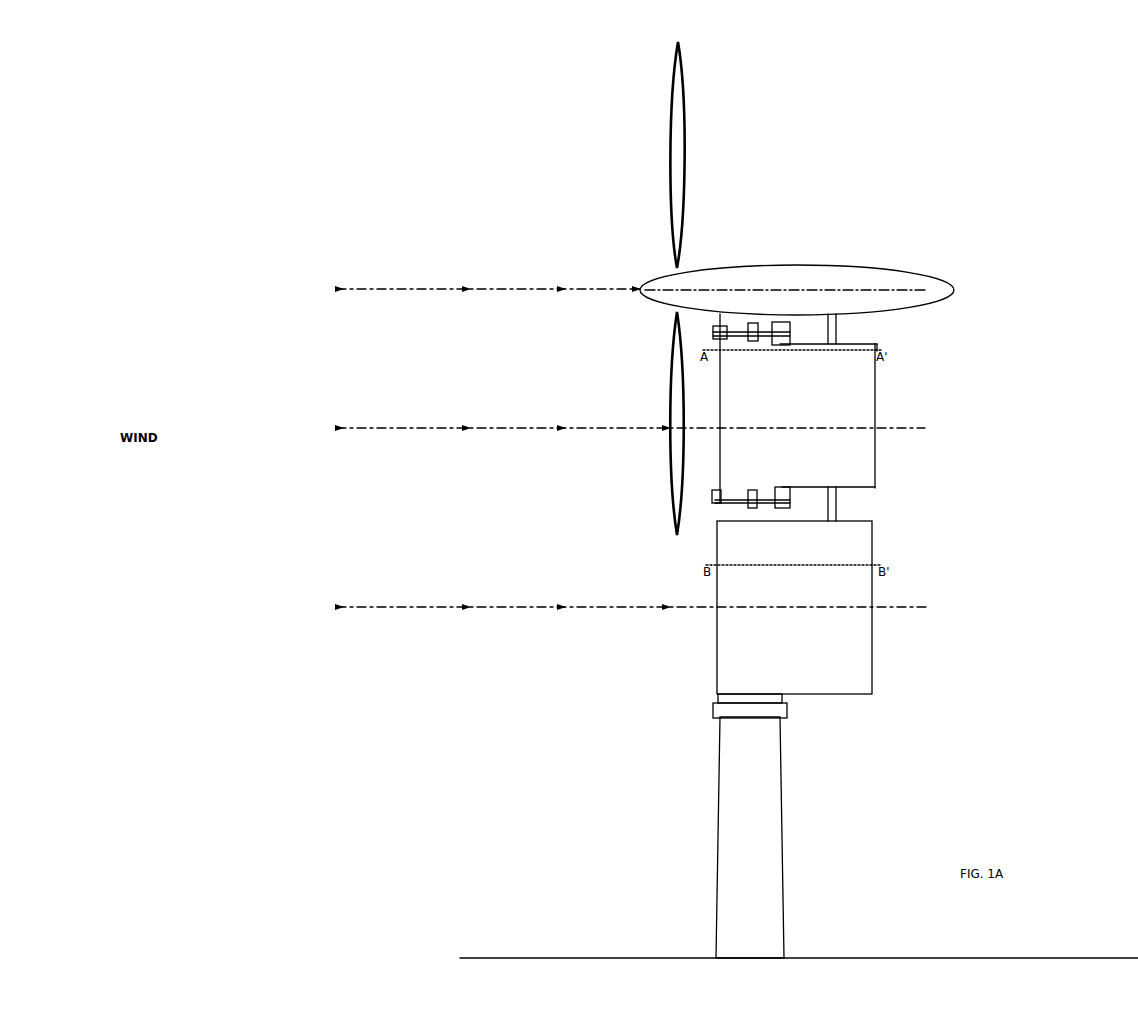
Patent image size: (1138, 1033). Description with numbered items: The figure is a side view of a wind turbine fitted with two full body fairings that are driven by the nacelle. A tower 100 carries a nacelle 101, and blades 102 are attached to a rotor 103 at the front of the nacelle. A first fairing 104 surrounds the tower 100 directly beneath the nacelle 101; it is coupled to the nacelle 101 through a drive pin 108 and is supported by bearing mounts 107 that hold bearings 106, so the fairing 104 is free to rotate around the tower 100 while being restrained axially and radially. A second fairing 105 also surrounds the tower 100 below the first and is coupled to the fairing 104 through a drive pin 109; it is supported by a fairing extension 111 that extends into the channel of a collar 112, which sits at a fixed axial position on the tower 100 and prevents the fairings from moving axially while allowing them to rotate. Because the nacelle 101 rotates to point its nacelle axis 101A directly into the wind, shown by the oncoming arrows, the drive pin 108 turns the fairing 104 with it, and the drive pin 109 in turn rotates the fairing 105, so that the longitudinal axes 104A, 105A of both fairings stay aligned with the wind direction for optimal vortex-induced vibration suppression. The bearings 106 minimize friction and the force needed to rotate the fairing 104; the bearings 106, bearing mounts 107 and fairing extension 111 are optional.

The tower 100 is at (780, 793).
The nacelle 101 is at (958, 284).
The nacelle axis 101A is at (770, 283).
The blades 102 is at (668, 130).
The rotor 103 is at (655, 304).
The fairing 104 is at (866, 415).
The longitudinal axis 104A is at (780, 423).
The fairing 105 is at (876, 634).
The longitudinal axis 105A is at (762, 610).
The bearings 106 is at (780, 322).
The bearing mounts 107 is at (719, 326).
The drive pin 108 is at (845, 334).
The drive pin 109 is at (845, 512).
The fairing extension 111 is at (716, 699).
The collar 112 is at (714, 711).